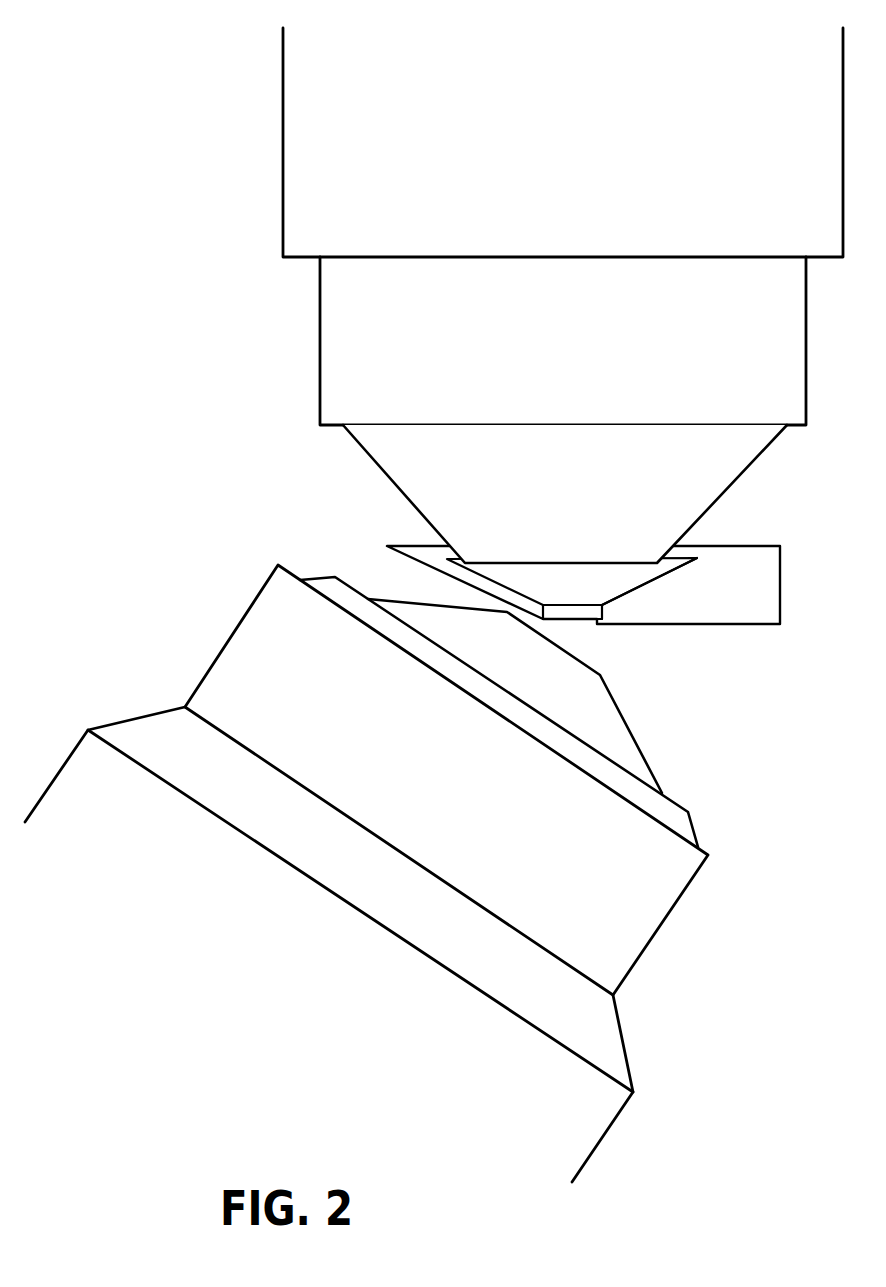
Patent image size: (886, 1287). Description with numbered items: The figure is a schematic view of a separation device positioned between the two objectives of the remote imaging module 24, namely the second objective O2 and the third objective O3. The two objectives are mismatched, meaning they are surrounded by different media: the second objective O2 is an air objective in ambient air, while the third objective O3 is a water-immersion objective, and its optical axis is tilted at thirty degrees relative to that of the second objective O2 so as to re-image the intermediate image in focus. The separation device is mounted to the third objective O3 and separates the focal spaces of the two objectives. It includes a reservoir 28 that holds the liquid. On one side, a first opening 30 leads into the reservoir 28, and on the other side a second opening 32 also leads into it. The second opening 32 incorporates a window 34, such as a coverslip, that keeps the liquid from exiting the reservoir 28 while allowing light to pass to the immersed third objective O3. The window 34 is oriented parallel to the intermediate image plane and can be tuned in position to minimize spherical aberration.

The remote imaging module 24 is at (737, 648).
The reservoir 28 is at (570, 580).
The first opening 30 is at (648, 572).
The second opening 32 is at (596, 633).
The window 34 is at (572, 613).
The third objective O3 is at (260, 340).
The second objective O2 is at (138, 658).